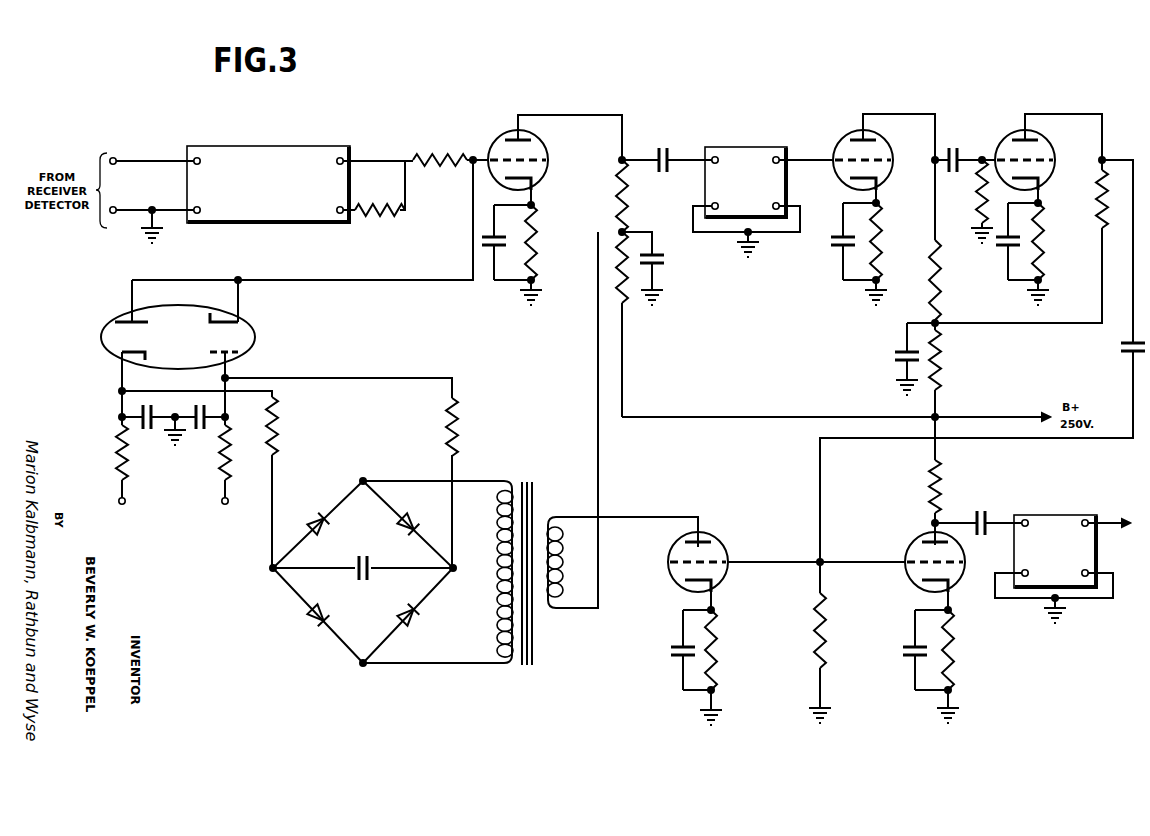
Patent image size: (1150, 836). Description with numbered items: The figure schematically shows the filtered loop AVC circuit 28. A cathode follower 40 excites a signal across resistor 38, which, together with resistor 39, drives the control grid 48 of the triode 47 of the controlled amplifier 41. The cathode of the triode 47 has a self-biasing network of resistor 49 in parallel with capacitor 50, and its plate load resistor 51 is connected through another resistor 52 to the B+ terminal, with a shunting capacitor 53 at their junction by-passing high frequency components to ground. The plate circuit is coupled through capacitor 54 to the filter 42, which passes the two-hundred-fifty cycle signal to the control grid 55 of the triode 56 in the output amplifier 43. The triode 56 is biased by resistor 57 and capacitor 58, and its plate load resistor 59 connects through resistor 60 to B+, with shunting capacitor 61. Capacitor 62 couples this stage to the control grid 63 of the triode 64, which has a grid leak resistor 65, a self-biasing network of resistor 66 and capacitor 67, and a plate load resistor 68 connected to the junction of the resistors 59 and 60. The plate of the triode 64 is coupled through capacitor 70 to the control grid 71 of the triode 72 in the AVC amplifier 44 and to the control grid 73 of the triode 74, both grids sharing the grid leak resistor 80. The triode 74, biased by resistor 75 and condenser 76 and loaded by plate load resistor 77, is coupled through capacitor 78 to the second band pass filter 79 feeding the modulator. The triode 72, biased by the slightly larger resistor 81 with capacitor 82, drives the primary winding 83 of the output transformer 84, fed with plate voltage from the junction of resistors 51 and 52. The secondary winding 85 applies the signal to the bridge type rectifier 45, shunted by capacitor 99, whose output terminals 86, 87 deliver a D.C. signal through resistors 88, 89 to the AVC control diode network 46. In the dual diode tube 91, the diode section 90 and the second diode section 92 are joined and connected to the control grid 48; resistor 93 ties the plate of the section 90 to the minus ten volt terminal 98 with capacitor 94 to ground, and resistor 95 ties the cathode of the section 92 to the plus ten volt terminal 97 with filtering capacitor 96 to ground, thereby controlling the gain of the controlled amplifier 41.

The filtered loop AVC circuit 28 is at (484, 329).
The resistor 38 is at (385, 207).
The resistor 39 is at (448, 158).
The cathode follower 40 is at (290, 146).
The controlled amplifier 41 is at (584, 110).
The filter 42 is at (735, 147).
The output amplifier 43 is at (990, 410).
The AVC amplifier 44 is at (719, 507).
The bridge type rectifier 45 is at (382, 610).
The AVC control diode network 46 is at (282, 349).
The triode 47 is at (545, 168).
The control grid 48 is at (480, 150).
The resistor 49 is at (536, 247).
The capacitor 50 is at (508, 240).
The plate load resistor 51 is at (619, 197).
The resistor 52 is at (628, 302).
The shunting capacitor 53 is at (665, 262).
The capacitor 54 is at (670, 150).
The control grid 55 is at (831, 160).
The triode 56 is at (895, 180).
The resistor 57 is at (881, 246).
The capacitor 58 is at (838, 250).
The plate load resistor 59 is at (930, 270).
The resistor 60 is at (941, 366).
The shunting capacitor 61 is at (898, 355).
The capacitor 62 is at (955, 148).
The control grid 63 is at (993, 148).
The triode 64 is at (1057, 183).
The grid leak resistor 65 is at (979, 207).
The resistor 66 is at (1045, 246).
The capacitor 67 is at (1005, 250).
The plate load resistor 68 is at (1099, 214).
The capacitor 70 is at (1127, 349).
The control grid 71 is at (760, 570).
The triode 72 is at (688, 585).
The control grid 73 is at (912, 558).
The triode 74 is at (910, 591).
The resistor 75 is at (962, 663).
The condenser 76 is at (910, 658).
The plate load resistor 77 is at (941, 503).
The capacitor 78 is at (988, 512).
The band pass filter 79 is at (1057, 515).
The grid leak resistor 80 is at (826, 632).
The resistor 81 is at (723, 641).
The capacitor 82 is at (678, 656).
The primary winding 83 is at (580, 553).
The output transformer 84 is at (544, 468).
The secondary winding 85 is at (495, 640).
The output terminal 86 is at (270, 573).
The output terminal 87 is at (456, 572).
The resistor 88 is at (278, 438).
The resistor 89 is at (459, 426).
The diode section 90 is at (250, 330).
The dual diode tube 91 is at (196, 310).
The diode section 92 is at (110, 356).
The resistor 93 is at (220, 466).
The capacitor 94 is at (192, 430).
The resistor 95 is at (117, 463).
The filtering capacitor 96 is at (156, 430).
The terminal 97 is at (118, 501).
The terminal 98 is at (228, 501).
The capacitor 99 is at (386, 553).